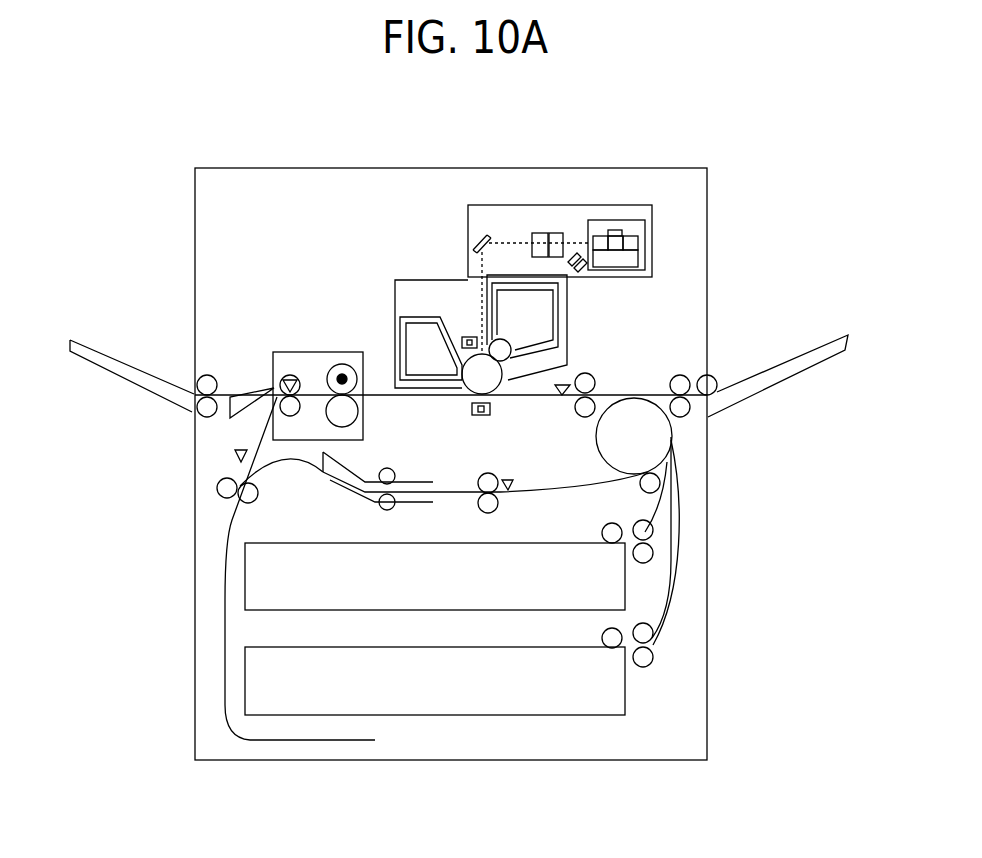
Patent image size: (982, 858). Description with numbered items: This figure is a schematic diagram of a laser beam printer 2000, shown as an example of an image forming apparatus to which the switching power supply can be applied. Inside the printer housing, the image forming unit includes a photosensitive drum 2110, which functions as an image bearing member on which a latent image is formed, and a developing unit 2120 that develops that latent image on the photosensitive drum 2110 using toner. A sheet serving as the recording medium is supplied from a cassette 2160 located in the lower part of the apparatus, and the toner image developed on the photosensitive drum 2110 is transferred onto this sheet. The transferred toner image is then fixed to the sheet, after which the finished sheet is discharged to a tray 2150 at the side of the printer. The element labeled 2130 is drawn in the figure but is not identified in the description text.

The laser beam printer 2000 is at (321, 178).
The photosensitive drum 2110 is at (423, 280).
The developing unit 2120 is at (508, 346).
The photosensitive drum 2130 is at (493, 385).
The tray 2150 is at (132, 371).
The cassette 2160 is at (483, 610).